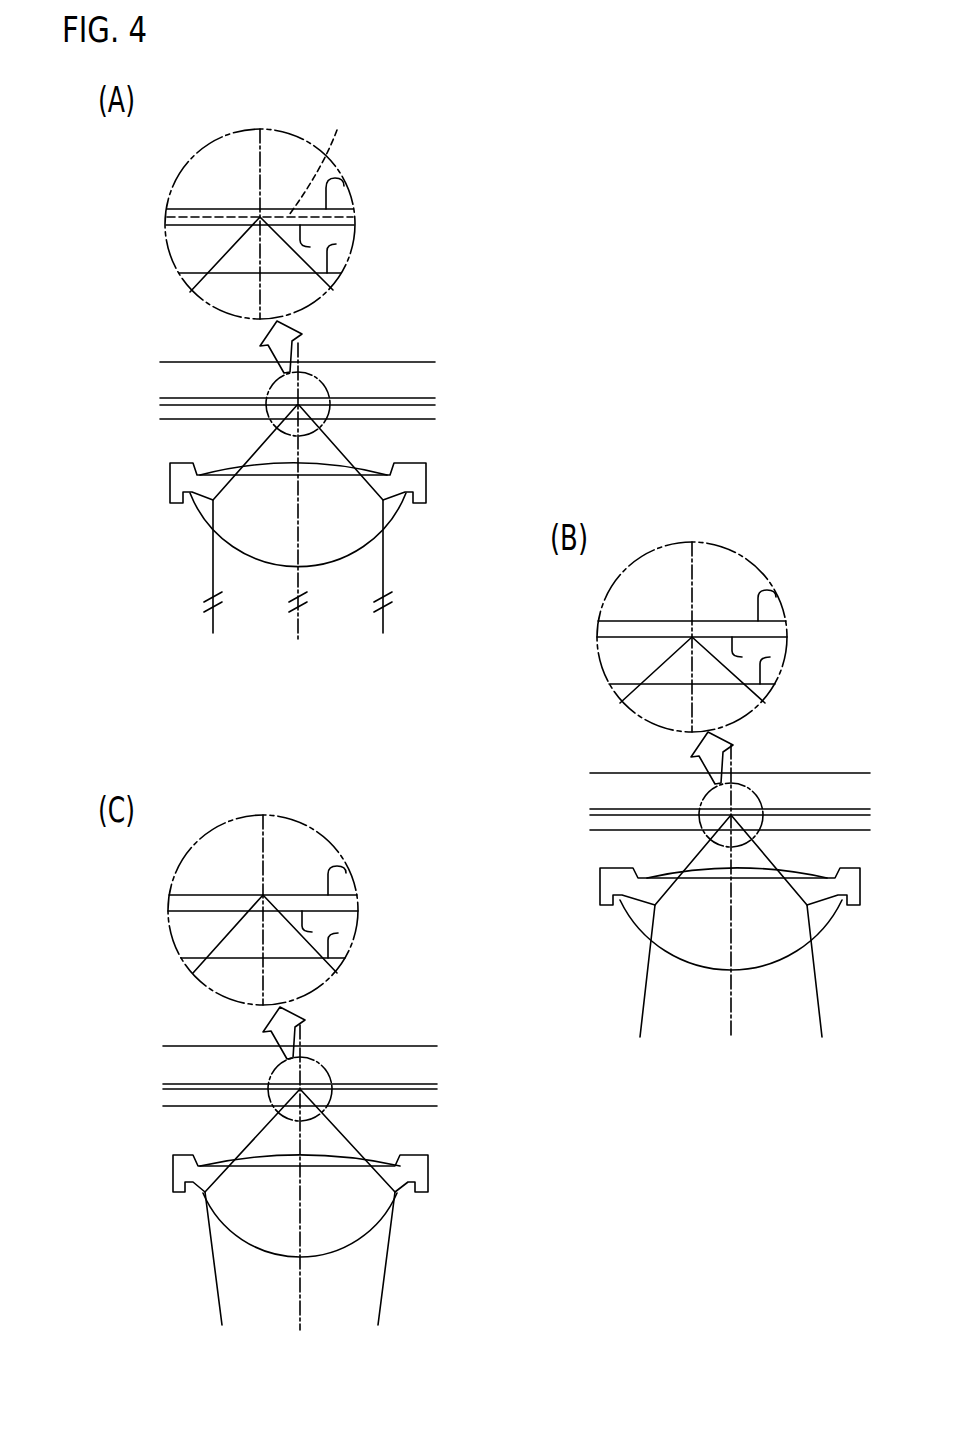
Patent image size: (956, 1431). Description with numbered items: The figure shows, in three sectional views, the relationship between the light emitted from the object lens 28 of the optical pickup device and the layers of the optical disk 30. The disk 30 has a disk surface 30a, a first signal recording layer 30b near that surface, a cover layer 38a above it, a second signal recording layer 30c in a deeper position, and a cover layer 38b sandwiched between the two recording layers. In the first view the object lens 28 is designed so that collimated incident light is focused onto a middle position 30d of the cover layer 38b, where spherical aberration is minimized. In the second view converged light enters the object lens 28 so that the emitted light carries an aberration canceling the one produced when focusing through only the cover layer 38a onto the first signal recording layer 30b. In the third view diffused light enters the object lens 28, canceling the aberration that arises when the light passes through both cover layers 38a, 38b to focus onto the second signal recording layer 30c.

The object lens 28 is at (426, 477).
The optical disk 30 is at (387, 362).
The disk surface 30a is at (336, 244).
The first signal recording layer 30b is at (310, 247).
The second signal recording layer 30c is at (344, 180).
The middle position 30d is at (322, 160).
The cover layer 38a is at (178, 250).
The cover layer 38b is at (177, 217).